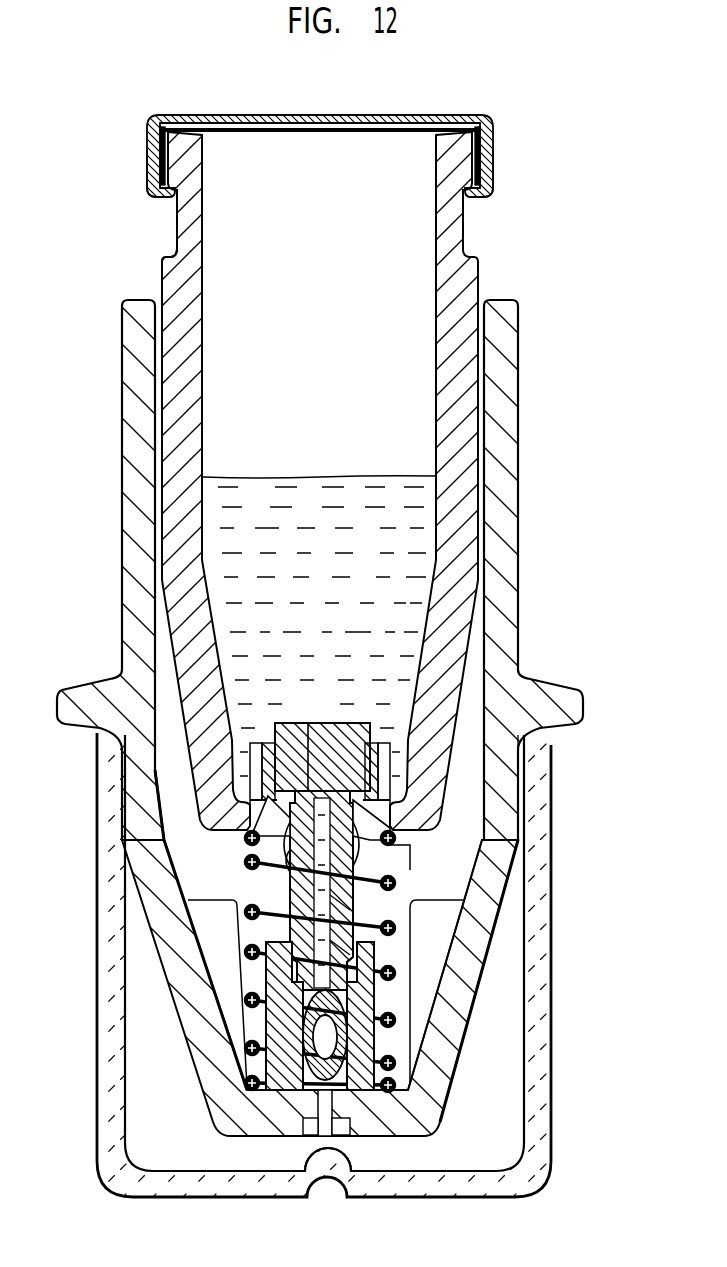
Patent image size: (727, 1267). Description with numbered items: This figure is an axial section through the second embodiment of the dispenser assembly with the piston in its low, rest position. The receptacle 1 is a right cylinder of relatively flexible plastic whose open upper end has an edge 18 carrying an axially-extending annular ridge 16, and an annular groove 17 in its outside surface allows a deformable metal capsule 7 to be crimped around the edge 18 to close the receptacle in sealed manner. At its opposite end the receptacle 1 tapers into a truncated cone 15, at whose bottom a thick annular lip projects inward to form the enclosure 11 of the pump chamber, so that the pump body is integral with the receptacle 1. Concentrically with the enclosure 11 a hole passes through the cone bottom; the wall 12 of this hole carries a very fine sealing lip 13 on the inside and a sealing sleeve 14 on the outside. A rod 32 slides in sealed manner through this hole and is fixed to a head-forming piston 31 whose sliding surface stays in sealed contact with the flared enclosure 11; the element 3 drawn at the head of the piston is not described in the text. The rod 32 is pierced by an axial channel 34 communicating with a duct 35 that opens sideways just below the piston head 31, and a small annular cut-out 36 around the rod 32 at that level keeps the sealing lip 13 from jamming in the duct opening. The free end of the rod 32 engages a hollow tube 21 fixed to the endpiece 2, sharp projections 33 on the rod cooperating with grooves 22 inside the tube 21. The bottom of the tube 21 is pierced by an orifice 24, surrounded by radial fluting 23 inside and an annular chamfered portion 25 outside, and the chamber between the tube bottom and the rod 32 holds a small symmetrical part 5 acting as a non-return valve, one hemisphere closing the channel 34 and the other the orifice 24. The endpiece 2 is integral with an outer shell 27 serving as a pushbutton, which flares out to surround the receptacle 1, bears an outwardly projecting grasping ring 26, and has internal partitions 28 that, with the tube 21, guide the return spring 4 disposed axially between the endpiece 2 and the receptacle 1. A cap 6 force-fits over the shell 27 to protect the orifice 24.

The receptacle 1 is at (470, 372).
The endpiece 2 is at (480, 905).
The stopper 3 is at (338, 745).
The return spring 4 is at (540, 838).
The non-return valve part 5 is at (343, 1196).
The cap 6 is at (500, 985).
The capsule 7 is at (432, 113).
The enclosure 11 is at (240, 770).
The wall of the hole 12 is at (284, 830).
The sealing lip 13 is at (285, 810).
The sealing sleeve 14 is at (290, 857).
The truncated cone 15 is at (190, 650).
The annular ridge 16 is at (150, 142).
The annular groove 17 is at (175, 212).
The edge 18 is at (483, 152).
The hollow tube 21 is at (280, 1025).
The grooves 22 is at (285, 975).
The fluting 23 is at (305, 1092).
The orifice 24 is at (328, 1122).
The annular chamfered portion 25 is at (310, 1120).
The grasping ring 26 is at (540, 700).
The outer shell 27 is at (465, 1013).
The partitions 28 is at (210, 915).
The piston head 31 is at (345, 790).
The rod 32 is at (390, 842).
The sharp projections 33 is at (335, 948).
The axial channel 34 is at (345, 905).
The duct 35 is at (395, 808).
The annular cut-out 36 is at (308, 745).